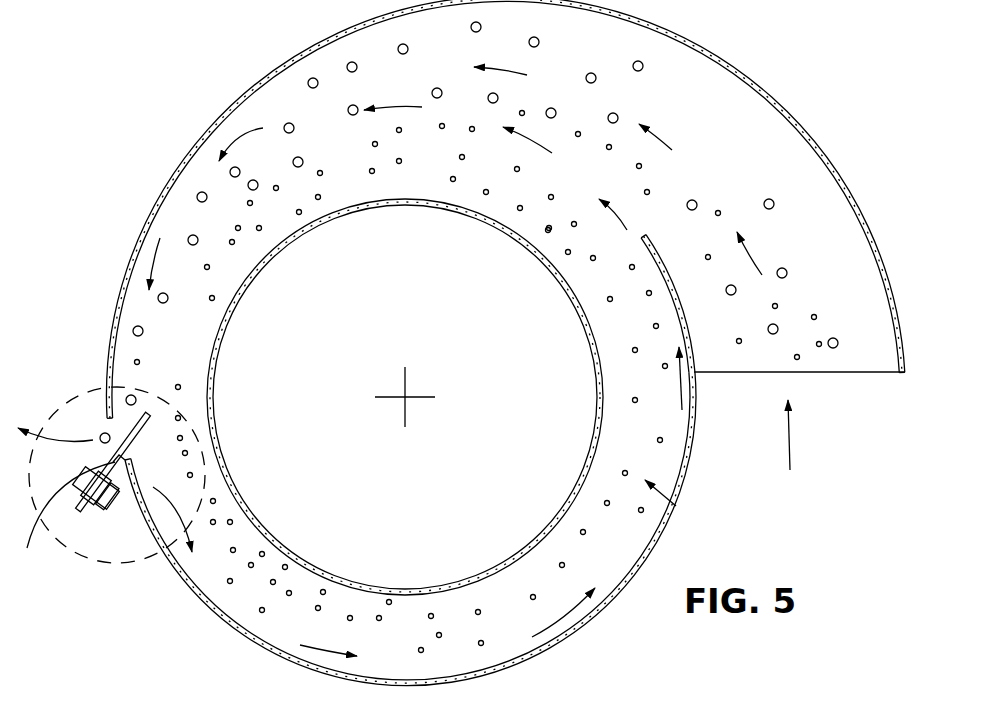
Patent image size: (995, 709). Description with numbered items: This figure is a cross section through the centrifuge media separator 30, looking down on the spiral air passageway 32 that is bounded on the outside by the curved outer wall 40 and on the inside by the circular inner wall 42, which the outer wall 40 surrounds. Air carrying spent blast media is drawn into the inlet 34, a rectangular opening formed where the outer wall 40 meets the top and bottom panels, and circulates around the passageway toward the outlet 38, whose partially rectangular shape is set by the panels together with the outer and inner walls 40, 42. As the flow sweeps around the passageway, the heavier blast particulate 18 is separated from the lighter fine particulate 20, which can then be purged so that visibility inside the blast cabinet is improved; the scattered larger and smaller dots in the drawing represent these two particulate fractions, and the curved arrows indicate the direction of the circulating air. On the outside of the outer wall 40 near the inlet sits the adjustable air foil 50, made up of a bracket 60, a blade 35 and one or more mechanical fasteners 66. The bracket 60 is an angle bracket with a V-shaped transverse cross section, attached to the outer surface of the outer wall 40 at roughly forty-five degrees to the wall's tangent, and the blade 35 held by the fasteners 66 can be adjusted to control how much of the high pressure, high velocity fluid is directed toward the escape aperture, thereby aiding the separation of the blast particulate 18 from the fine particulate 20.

The centrifuge media separator 30 is at (167, 83).
The air passageway 32 is at (337, 143).
The blast particulate 18 is at (713, 92).
The outer wall 40 is at (834, 164).
The inlet 34 is at (862, 355).
The inner wall 42 is at (214, 338).
The outlet 38 is at (628, 296).
The fine particulate 20 is at (678, 508).
The blade 35 is at (136, 436).
The bracket 60 is at (125, 520).
The mechanical fasteners 66 is at (99, 501).
The air foil 50 is at (86, 567).